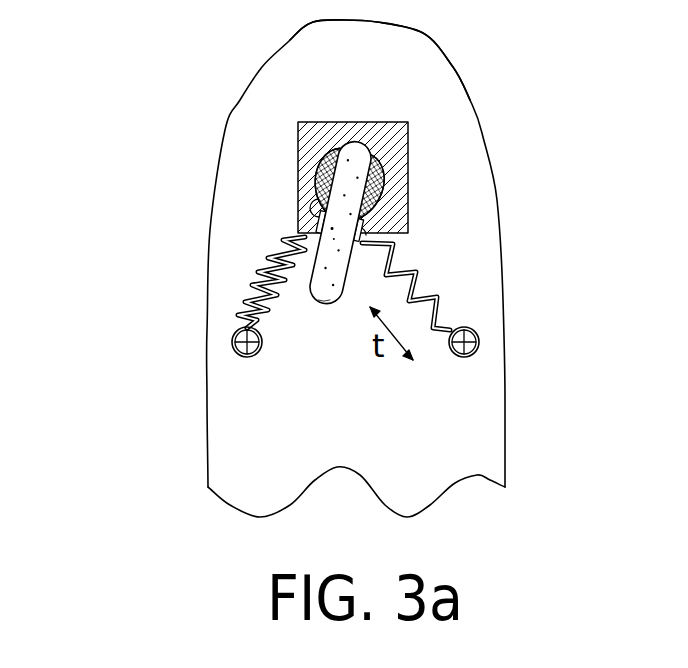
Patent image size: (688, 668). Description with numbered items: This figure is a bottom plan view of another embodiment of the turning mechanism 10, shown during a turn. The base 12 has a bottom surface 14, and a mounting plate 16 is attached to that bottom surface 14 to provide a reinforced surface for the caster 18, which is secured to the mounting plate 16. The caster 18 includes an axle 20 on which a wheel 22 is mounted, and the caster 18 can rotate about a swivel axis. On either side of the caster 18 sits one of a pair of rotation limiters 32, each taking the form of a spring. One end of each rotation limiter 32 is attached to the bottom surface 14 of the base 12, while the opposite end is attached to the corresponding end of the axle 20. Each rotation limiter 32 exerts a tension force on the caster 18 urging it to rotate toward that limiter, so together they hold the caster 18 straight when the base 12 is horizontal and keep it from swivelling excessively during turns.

The turning mechanism 10 is at (227, 182).
The base 12 is at (458, 77).
The bottom surface 14 is at (370, 442).
The mounting plate 16 is at (363, 122).
The caster 18 is at (392, 176).
The axle 20 is at (358, 200).
The wheel 22 is at (335, 302).
The rotation limiters 32 is at (300, 307).